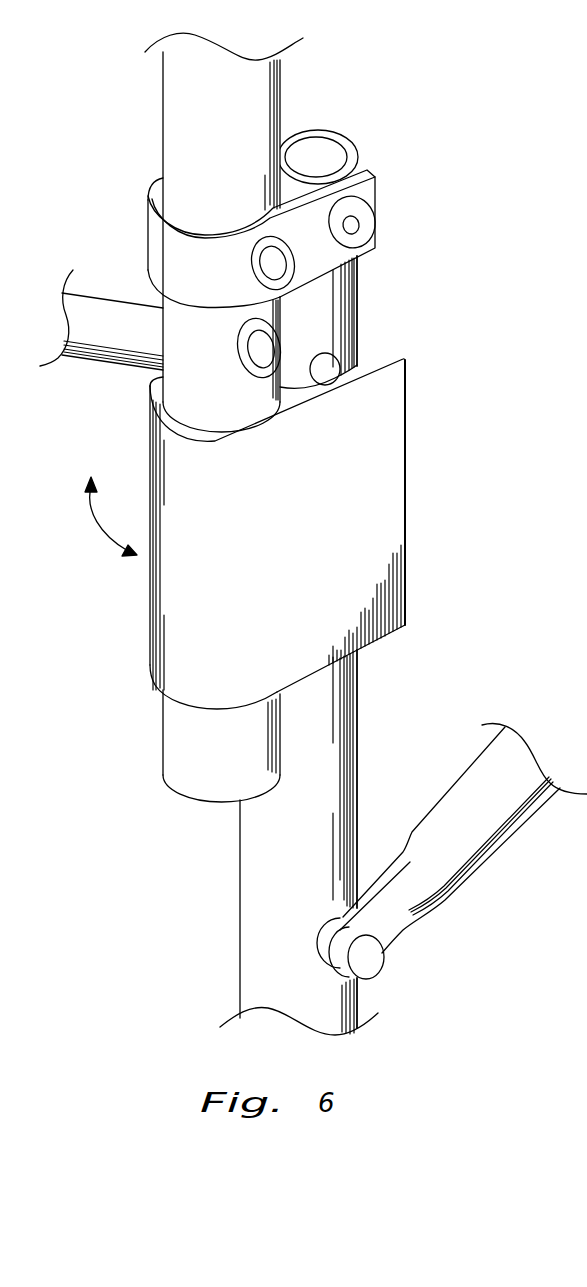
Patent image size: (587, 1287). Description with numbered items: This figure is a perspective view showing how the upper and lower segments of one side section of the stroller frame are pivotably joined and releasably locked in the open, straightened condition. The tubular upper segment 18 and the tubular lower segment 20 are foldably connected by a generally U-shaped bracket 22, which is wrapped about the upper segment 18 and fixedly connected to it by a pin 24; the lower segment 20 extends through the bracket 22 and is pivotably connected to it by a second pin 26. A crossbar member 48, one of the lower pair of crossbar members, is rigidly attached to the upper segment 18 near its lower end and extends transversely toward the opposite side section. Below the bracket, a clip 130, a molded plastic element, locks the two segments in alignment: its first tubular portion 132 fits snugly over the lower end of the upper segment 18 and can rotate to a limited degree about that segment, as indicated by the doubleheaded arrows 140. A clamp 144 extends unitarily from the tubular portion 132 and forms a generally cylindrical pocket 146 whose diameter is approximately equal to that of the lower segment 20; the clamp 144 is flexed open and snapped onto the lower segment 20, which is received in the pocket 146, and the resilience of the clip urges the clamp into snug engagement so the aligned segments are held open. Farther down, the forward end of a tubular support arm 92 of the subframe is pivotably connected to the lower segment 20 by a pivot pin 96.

The tubular upper segment 18 is at (163, 100).
The tubular lower segment 20 is at (358, 777).
The U-shaped bracket 22 is at (353, 175).
The pin 24 is at (273, 267).
The second pin 26 is at (353, 225).
The crossbar member 48 is at (98, 372).
The support arm 92 is at (483, 812).
The pivot pin 96 is at (368, 956).
The clip 130 is at (405, 530).
The tubular portion 132 is at (150, 660).
The doubleheaded arrows 140 is at (95, 525).
The clamp 144 is at (376, 347).
The pocket 146 is at (336, 365).